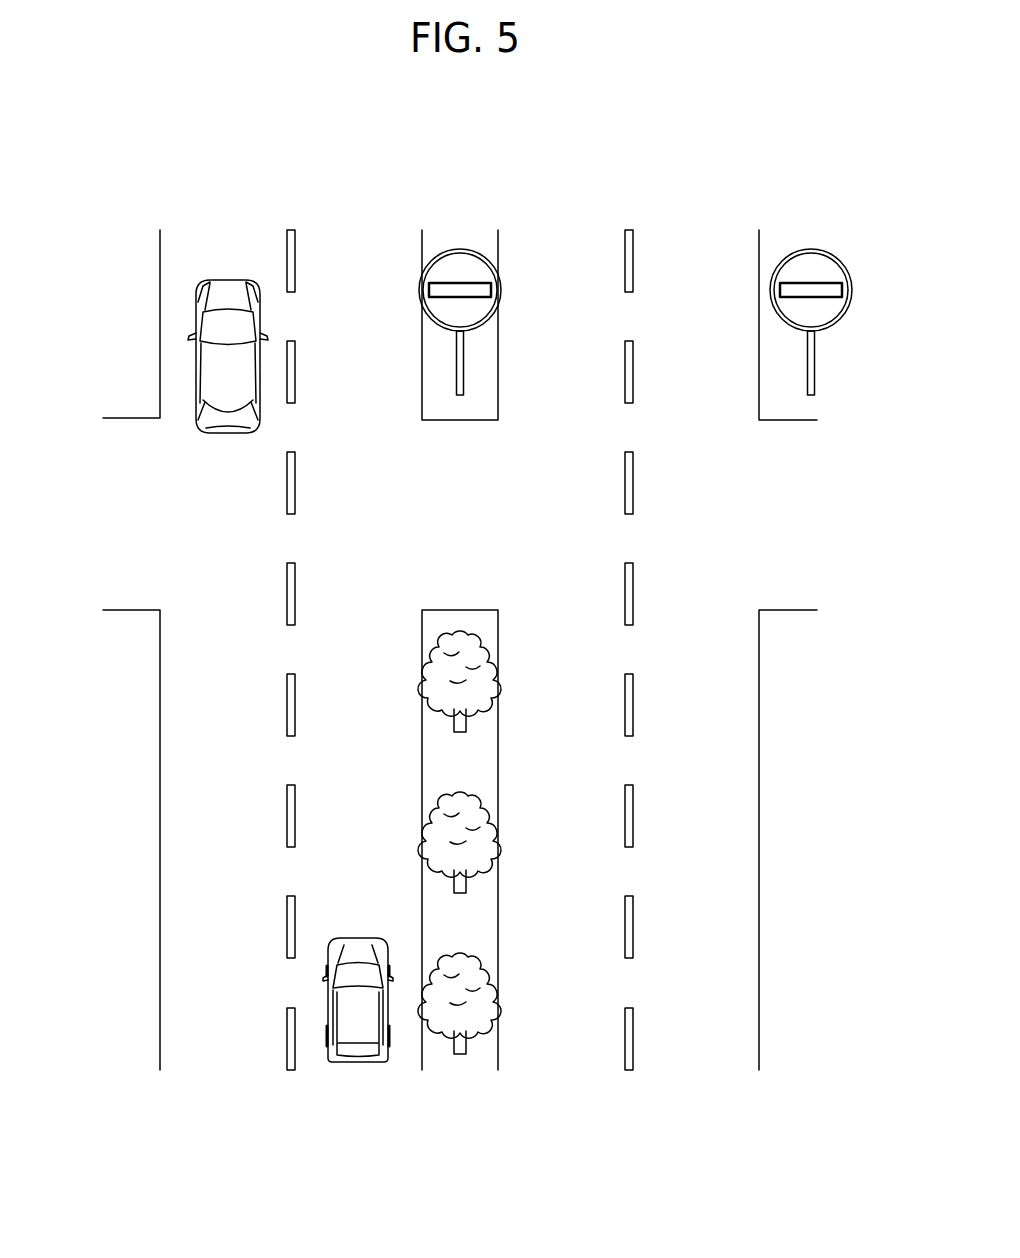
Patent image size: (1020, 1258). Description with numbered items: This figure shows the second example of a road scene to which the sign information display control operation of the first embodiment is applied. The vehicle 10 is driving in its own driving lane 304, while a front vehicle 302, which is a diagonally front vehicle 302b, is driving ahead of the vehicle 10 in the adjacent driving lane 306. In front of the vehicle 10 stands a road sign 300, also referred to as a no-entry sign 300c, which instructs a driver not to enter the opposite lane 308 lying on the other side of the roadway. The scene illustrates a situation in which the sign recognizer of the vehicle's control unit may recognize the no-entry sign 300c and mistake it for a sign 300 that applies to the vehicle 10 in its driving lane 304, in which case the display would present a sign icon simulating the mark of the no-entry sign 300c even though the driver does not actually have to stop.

The vehicle 10 is at (359, 943).
The road sign 300 is at (462, 258).
The no-entry sign 300c is at (811, 258).
The front vehicle 302 is at (151, 356).
The diagonally front vehicle 302b is at (199, 308).
The driving lane 304 is at (344, 243).
The adjacent driving lane 306 is at (216, 243).
The opposite lane 308 is at (562, 243).